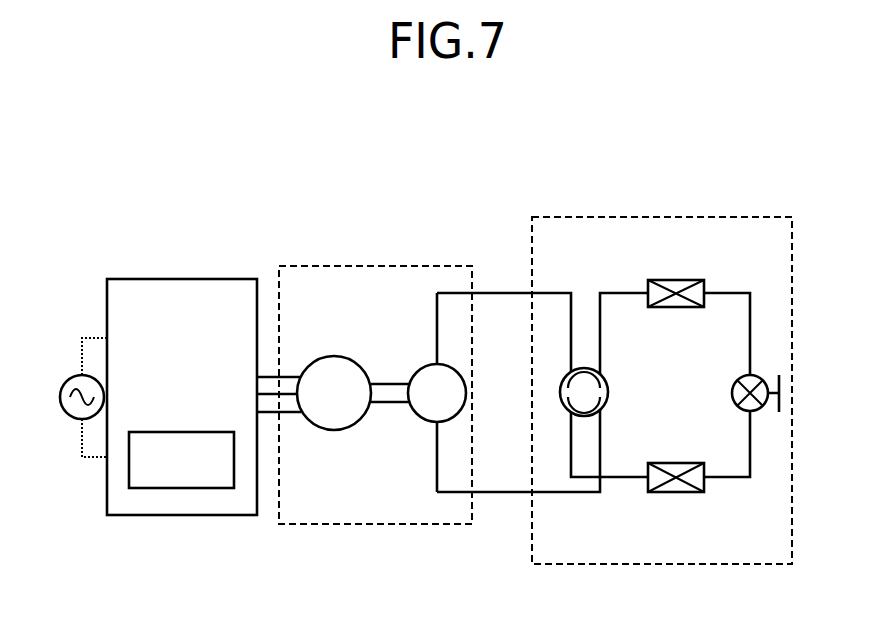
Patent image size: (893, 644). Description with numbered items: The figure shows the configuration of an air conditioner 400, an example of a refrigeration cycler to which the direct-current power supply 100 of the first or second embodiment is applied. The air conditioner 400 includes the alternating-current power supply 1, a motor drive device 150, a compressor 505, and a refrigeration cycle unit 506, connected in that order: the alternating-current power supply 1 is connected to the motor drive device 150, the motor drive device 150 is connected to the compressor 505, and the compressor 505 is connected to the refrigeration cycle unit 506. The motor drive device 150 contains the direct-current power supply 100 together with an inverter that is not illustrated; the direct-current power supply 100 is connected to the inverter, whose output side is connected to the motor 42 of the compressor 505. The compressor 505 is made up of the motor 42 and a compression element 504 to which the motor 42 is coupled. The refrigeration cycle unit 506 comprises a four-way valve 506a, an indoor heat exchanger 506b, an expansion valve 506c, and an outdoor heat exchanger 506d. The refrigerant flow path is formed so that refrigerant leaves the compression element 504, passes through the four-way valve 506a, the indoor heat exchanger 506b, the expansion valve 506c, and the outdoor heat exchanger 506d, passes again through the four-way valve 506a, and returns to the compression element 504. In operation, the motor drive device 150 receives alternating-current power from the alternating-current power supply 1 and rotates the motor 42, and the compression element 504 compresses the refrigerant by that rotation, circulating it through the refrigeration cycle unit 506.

The alternating-current power supply 1 is at (66, 380).
The motor 42 is at (342, 430).
The direct-current power supply 100 is at (208, 490).
The motor drive device 150 is at (218, 279).
The air conditioner 400 is at (417, 151).
The compression element 504 is at (429, 366).
The compressor 505 is at (435, 267).
The refrigeration cycle unit 506 is at (766, 217).
The four-way valve 506a is at (650, 368).
The indoor heat exchanger 506b is at (674, 280).
The expansion valve 506c is at (757, 377).
The outdoor heat exchanger 506d is at (680, 492).